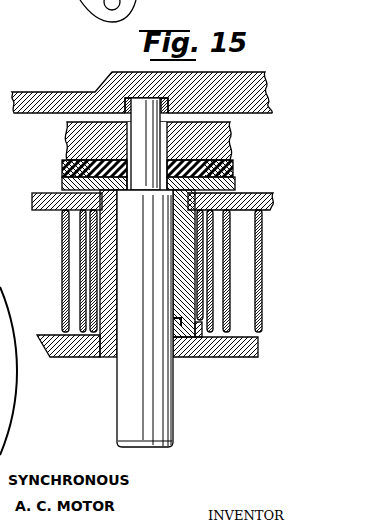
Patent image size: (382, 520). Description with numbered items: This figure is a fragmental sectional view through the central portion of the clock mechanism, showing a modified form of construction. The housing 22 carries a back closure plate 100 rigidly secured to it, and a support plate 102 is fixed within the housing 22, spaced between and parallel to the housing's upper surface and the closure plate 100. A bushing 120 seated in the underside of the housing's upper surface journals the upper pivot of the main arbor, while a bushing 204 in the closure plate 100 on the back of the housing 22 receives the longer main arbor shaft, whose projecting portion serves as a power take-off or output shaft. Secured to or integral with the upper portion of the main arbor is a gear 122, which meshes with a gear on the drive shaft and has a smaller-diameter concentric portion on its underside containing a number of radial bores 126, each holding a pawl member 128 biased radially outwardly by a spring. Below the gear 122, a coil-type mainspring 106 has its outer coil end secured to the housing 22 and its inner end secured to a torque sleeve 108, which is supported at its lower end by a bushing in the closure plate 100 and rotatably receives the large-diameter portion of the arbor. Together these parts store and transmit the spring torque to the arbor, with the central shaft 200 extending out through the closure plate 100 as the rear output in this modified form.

The housing 22 is at (44, 96).
The gear 122 is at (233, 140).
The pawl member 128 is at (235, 170).
The radial bores 126 is at (65, 183).
The bushing 120 is at (145, 144).
The support plate 102 is at (255, 193).
The coil-type mainspring 106 is at (66, 297).
The bushing 204 is at (107, 358).
The torque sleeve 108 is at (182, 358).
The back closure plate 100 is at (240, 354).
The motor shaft 200 is at (175, 431).